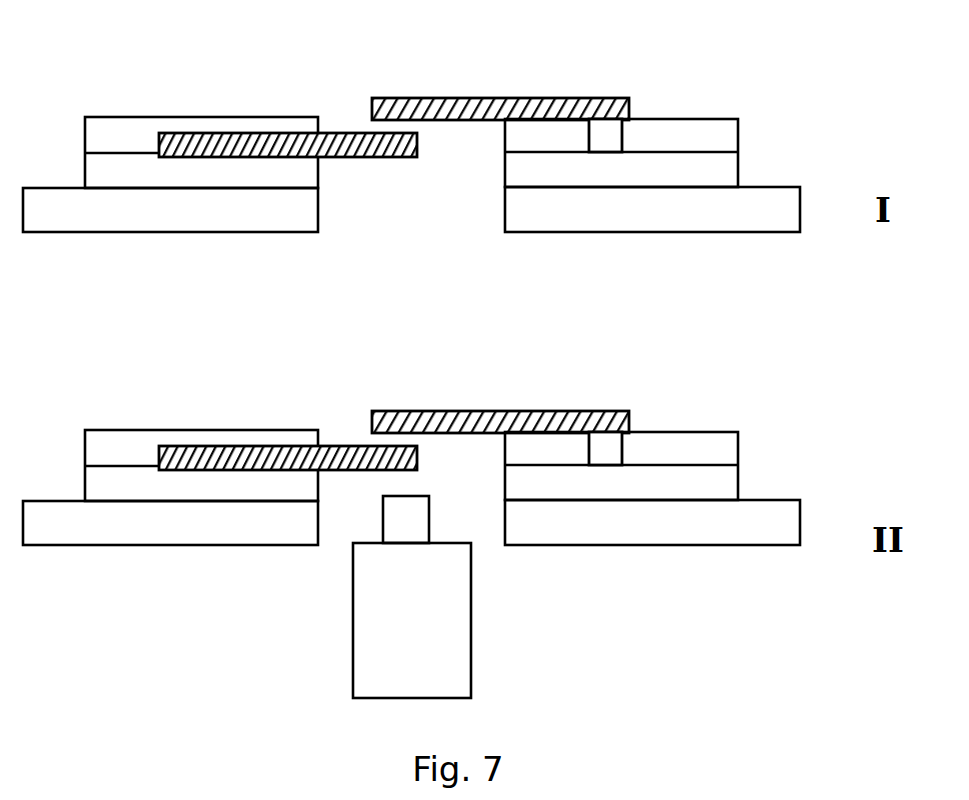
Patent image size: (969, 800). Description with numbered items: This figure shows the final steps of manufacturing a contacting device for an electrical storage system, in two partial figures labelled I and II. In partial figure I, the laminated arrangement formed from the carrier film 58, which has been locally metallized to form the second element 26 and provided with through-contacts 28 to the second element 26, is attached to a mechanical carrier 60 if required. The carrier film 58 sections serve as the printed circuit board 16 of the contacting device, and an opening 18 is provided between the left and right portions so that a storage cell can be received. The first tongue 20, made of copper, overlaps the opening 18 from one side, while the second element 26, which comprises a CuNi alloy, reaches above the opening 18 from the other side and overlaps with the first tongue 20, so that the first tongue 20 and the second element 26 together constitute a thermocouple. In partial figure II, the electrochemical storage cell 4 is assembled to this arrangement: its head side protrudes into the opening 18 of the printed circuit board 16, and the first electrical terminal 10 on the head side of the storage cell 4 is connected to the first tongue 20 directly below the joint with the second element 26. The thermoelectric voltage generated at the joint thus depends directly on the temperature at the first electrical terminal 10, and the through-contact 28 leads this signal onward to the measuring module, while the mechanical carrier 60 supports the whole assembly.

The electrochemical storage cell 4 is at (443, 633).
The first electrical terminal 10 is at (400, 520).
The printed circuit board 16 is at (723, 78).
The opening 18 is at (477, 238).
The first tongue 20 is at (356, 158).
The second element 26 is at (437, 108).
The through-contact 28 is at (613, 140).
The carrier film 58 is at (115, 443).
The mechanical carrier 60 is at (773, 207).